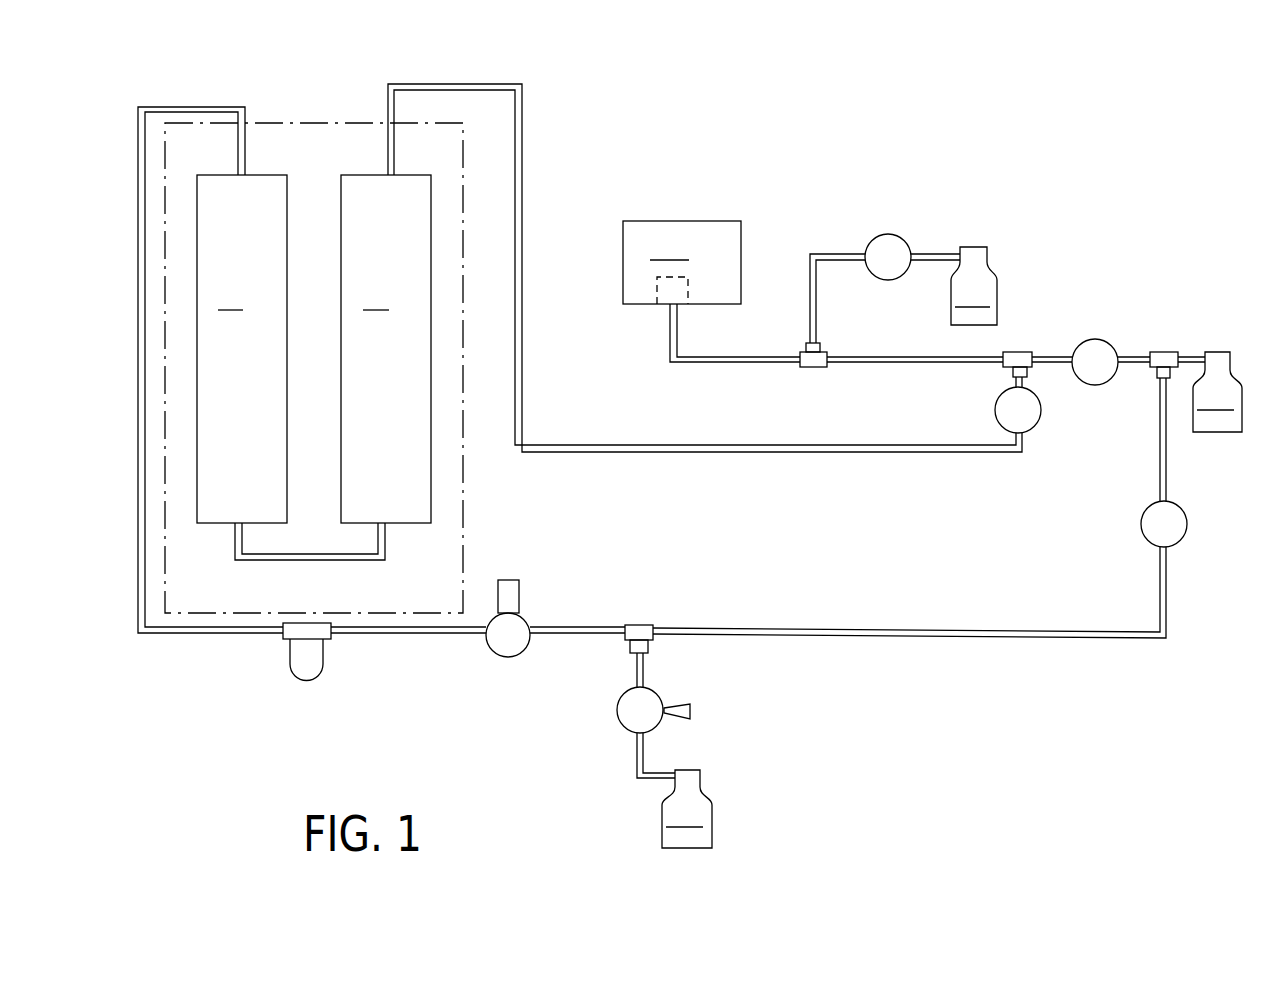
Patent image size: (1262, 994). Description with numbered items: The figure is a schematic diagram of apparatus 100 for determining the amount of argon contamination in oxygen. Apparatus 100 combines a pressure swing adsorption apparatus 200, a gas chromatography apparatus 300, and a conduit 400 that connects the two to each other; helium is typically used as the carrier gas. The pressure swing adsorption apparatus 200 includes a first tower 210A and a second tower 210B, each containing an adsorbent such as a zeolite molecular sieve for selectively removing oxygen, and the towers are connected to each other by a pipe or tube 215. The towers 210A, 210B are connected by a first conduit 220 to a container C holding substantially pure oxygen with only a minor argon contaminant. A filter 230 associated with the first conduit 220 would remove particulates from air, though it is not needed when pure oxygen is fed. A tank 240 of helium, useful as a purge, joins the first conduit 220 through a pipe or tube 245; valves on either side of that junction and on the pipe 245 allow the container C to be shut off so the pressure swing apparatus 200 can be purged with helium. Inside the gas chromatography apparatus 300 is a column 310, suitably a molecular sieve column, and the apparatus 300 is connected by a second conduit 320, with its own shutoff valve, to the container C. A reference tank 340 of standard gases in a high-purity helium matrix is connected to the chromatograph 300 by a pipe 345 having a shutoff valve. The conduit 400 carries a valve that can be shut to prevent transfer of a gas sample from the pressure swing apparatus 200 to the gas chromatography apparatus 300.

The apparatus 100 is at (934, 95).
The pressure swing adsorption apparatus 200 is at (537, 64).
The first tower 210A is at (264, 387).
The second tower 210B is at (413, 387).
The pipe or tube 215 is at (320, 552).
The first conduit 220 is at (903, 639).
The filter 230 is at (287, 650).
The tank of helium gas 240 is at (712, 820).
The pipe or tube 245 is at (632, 757).
The gas chromatography apparatus 300 is at (750, 201).
The column 310 is at (655, 285).
The second conduit 320 is at (903, 368).
The reference tank 340 is at (998, 278).
The pipe 345 is at (828, 252).
The conduit 400 is at (808, 453).
The container C is at (1218, 435).